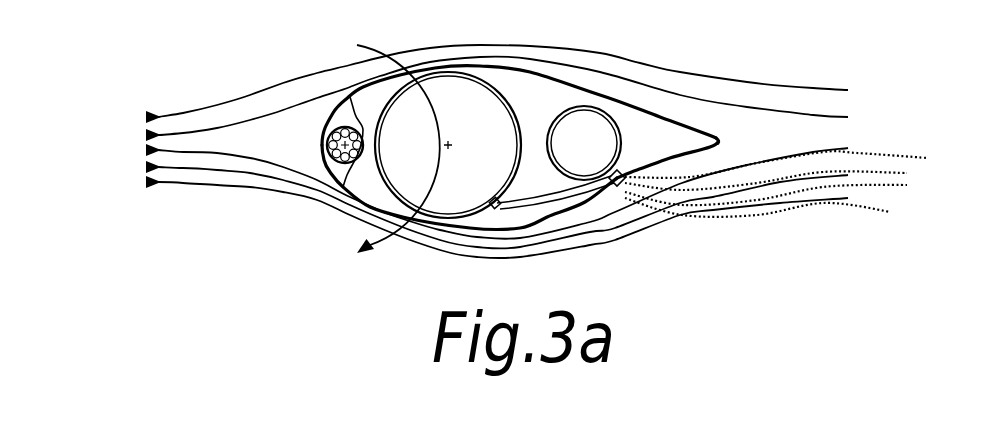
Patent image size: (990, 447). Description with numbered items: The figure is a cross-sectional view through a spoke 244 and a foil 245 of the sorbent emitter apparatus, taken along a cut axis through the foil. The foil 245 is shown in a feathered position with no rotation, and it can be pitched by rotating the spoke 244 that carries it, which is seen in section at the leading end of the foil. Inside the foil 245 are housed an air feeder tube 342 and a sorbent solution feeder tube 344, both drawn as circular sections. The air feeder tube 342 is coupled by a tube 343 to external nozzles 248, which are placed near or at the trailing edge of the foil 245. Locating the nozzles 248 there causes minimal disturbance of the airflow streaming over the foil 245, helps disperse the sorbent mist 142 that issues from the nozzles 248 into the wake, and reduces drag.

The sorbent mist 142 is at (776, 184).
The spoke 244 is at (326, 140).
The foil 245 is at (520, 108).
The external nozzles 248 is at (617, 185).
The air feeder tube 342 is at (463, 153).
The tube 343 is at (509, 203).
The sorbent solution feeder tube 344 is at (567, 153).